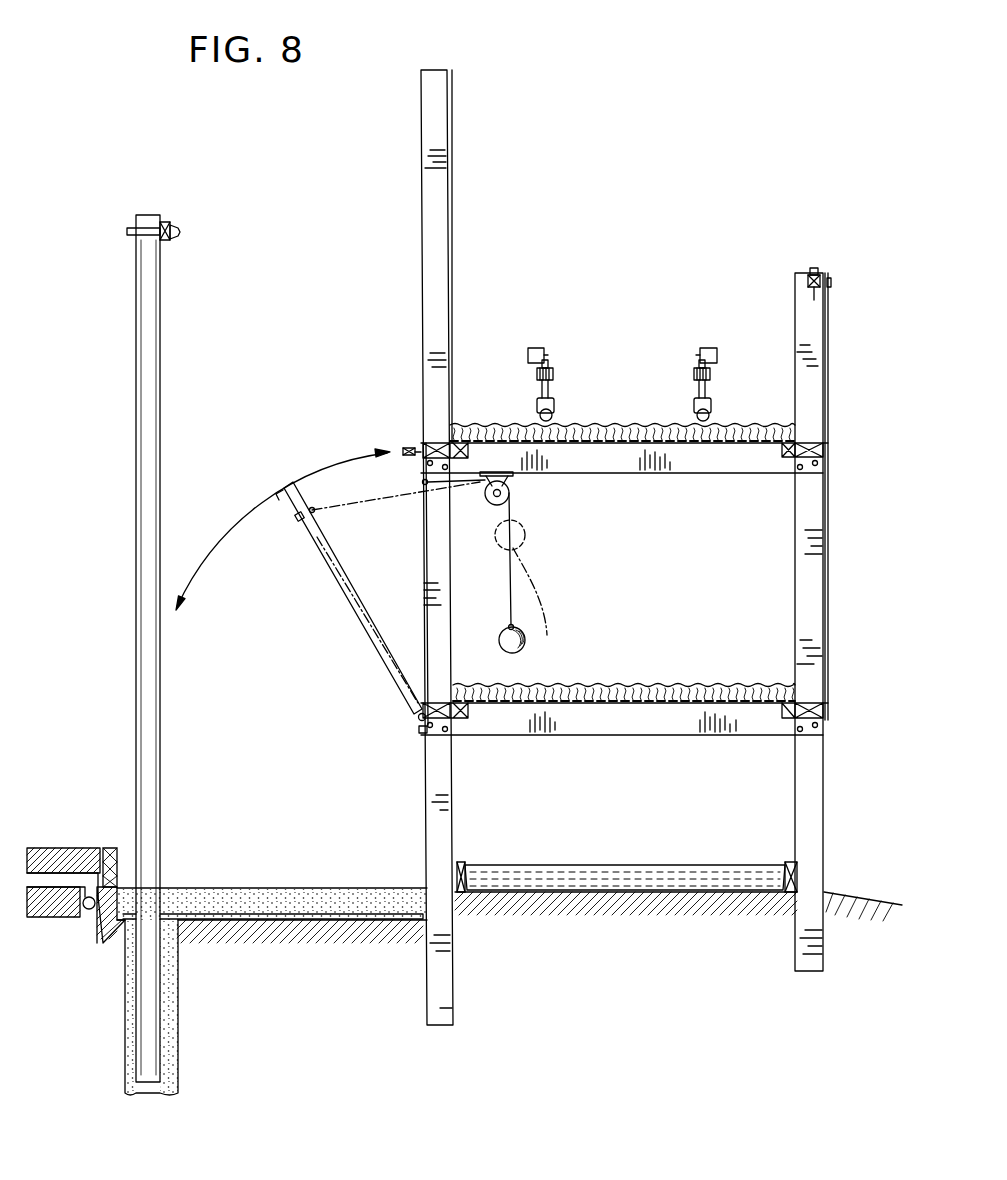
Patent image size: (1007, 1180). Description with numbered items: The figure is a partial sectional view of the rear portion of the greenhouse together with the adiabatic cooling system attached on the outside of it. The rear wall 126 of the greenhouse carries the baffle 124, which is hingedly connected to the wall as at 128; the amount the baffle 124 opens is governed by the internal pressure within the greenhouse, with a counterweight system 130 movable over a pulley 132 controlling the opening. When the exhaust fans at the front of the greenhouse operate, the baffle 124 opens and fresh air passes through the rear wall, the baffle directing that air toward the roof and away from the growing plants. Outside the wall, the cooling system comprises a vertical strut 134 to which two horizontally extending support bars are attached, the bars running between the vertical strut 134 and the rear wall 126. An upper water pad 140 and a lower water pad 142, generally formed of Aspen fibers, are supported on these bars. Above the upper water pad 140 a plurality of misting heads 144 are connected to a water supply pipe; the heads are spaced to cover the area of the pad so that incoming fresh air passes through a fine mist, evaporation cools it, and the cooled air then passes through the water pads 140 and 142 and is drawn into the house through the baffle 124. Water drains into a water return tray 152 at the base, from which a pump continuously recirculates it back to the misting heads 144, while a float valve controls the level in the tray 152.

The baffle 124 is at (418, 608).
The rear wall 126 is at (422, 278).
The hinge connection 128 is at (420, 720).
The counterweight system 130 is at (526, 642).
The pulley 132 is at (511, 493).
The vertical strut 134 is at (806, 581).
The upper water pad 140 is at (631, 430).
The lower water pad 142 is at (691, 690).
The misting heads 144 is at (557, 373).
The water return tray 152 is at (609, 866).